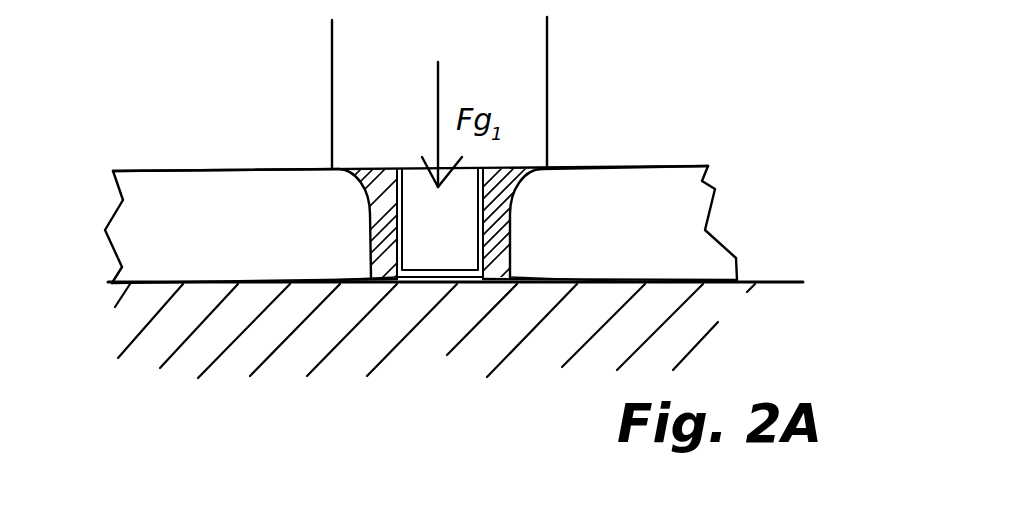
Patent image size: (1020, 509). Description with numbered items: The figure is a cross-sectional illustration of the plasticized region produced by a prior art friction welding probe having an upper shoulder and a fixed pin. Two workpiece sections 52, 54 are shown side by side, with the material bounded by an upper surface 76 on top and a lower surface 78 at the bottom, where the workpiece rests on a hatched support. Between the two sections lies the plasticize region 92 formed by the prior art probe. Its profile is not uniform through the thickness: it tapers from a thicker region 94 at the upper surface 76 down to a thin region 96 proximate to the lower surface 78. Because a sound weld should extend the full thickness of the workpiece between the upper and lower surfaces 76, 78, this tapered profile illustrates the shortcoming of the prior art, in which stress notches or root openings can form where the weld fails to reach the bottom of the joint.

The workpiece section 52 is at (145, 165).
The workpiece section 54 is at (610, 183).
The upper surface 76 is at (676, 167).
The lower surface 78 is at (713, 283).
The plasticize region 92 is at (517, 189).
The thicker region 94 is at (368, 184).
The thin region 96 is at (382, 260).